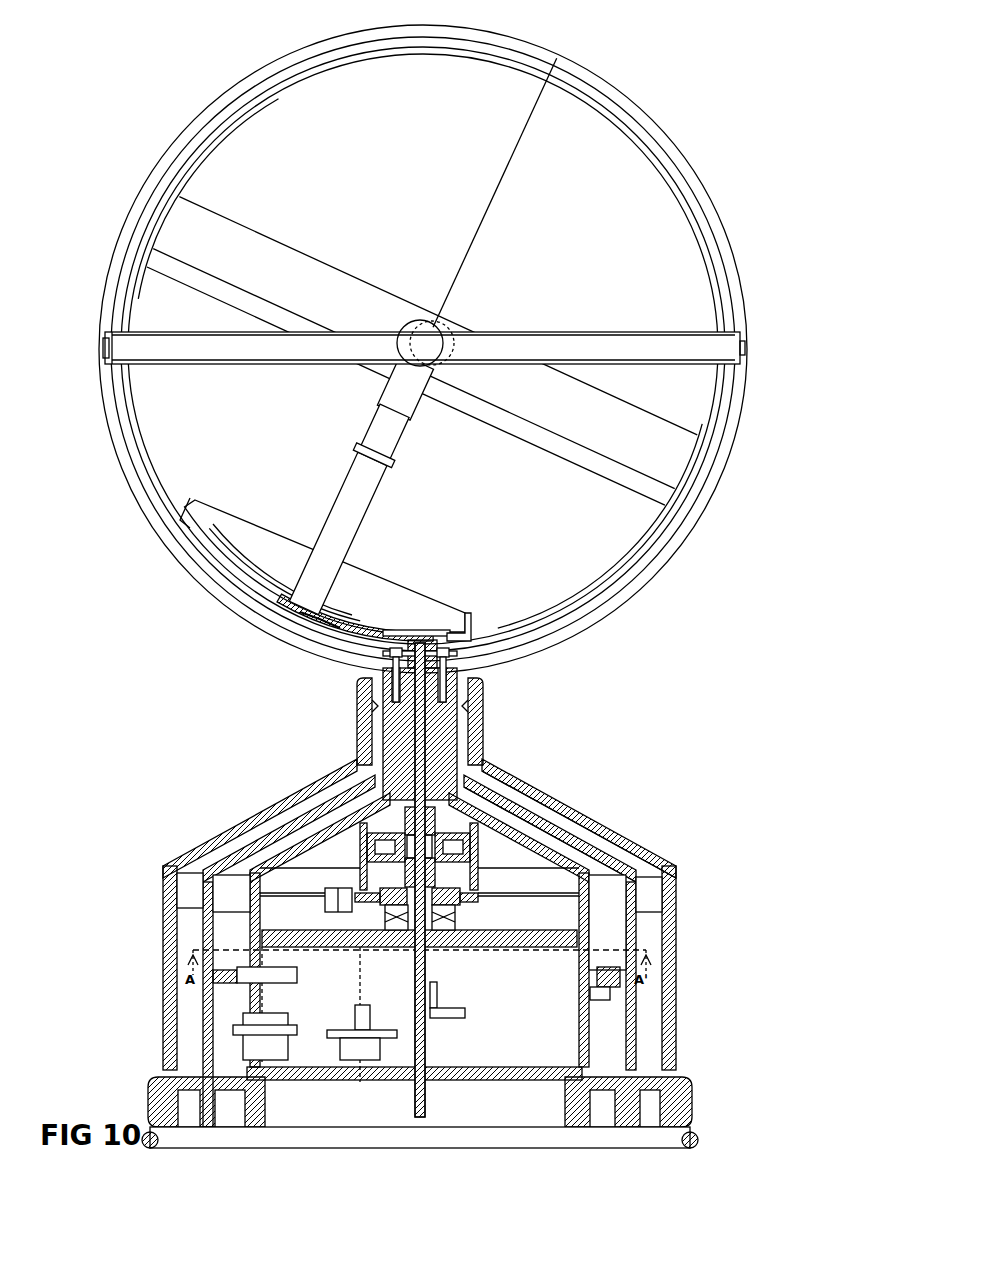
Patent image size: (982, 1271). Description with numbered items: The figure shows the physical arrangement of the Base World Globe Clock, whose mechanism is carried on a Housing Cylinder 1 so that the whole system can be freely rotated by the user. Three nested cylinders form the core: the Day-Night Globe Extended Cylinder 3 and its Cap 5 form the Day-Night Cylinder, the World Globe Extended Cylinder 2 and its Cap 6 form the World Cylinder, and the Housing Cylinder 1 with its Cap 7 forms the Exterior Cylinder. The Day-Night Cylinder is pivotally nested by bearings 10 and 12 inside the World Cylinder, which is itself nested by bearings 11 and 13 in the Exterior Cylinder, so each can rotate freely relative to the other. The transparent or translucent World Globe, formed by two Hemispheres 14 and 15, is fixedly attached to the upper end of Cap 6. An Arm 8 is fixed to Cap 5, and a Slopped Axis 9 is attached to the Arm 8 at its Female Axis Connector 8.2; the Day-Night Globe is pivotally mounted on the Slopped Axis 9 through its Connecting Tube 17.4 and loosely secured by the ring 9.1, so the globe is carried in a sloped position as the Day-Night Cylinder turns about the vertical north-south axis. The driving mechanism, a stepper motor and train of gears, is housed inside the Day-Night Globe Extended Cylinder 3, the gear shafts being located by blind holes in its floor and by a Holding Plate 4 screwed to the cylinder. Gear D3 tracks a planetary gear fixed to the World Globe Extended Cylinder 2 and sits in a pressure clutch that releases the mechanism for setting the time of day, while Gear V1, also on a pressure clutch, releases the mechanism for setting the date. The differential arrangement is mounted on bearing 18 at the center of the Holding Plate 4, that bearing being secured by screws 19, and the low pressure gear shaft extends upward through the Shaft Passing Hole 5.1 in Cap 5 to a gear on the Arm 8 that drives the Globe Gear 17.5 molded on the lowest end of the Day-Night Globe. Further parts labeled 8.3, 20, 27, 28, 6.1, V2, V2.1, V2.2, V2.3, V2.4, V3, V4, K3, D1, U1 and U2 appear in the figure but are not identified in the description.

The housing cylinder 1 is at (672, 976).
The world globe extended cylinder 2 is at (632, 943).
The day-night globe extended cylinder 3 is at (635, 893).
The holding plate 4 is at (615, 878).
The day-night globe extended cylinder cap 5 is at (497, 895).
The world globe extended cylinder cap 6 is at (567, 838).
The housing cylinder cap 7 is at (565, 810).
The arm 8 is at (335, 640).
The female axis connector 8.2 is at (292, 609).
The cradle segment 8.3 is at (228, 576).
The slopped axis 9 is at (393, 434).
The ring 9.1 is at (393, 463).
The bearing 10 is at (625, 1078).
The bearing 11 is at (673, 1093).
The bearing 12 is at (455, 683).
The bearing 13 is at (468, 703).
The hemisphere 14 is at (716, 208).
The hemisphere 15 is at (710, 487).
The connecting tube 17.4 is at (346, 477).
The globe gear 17.5 is at (308, 626).
The bearing 18 is at (452, 912).
The screws 19 is at (386, 912).
The central shaft 20 is at (440, 957).
The arm hub section 27 is at (428, 398).
The hub 28 is at (440, 327).
The shaft passing hole 5.1 is at (412, 724).
The neck outer wall 6.1 is at (370, 688).
The inner wall connection V2 is at (588, 866).
The connection tube V2.1 is at (508, 802).
The connection tube outer V2.2 is at (490, 784).
The upper connection block V2.3 is at (405, 822).
The left connection tube V2.4 is at (347, 843).
The bracket connection V3 is at (434, 628).
The left wall connection V4 is at (203, 990).
The coupling box K3 is at (327, 890).
The gear D3 is at (291, 977).
The lower disc D1 is at (282, 1040).
The upper guide block U1 is at (356, 1012).
The guide plate U2 is at (345, 1028).
The gear V1 is at (458, 1009).